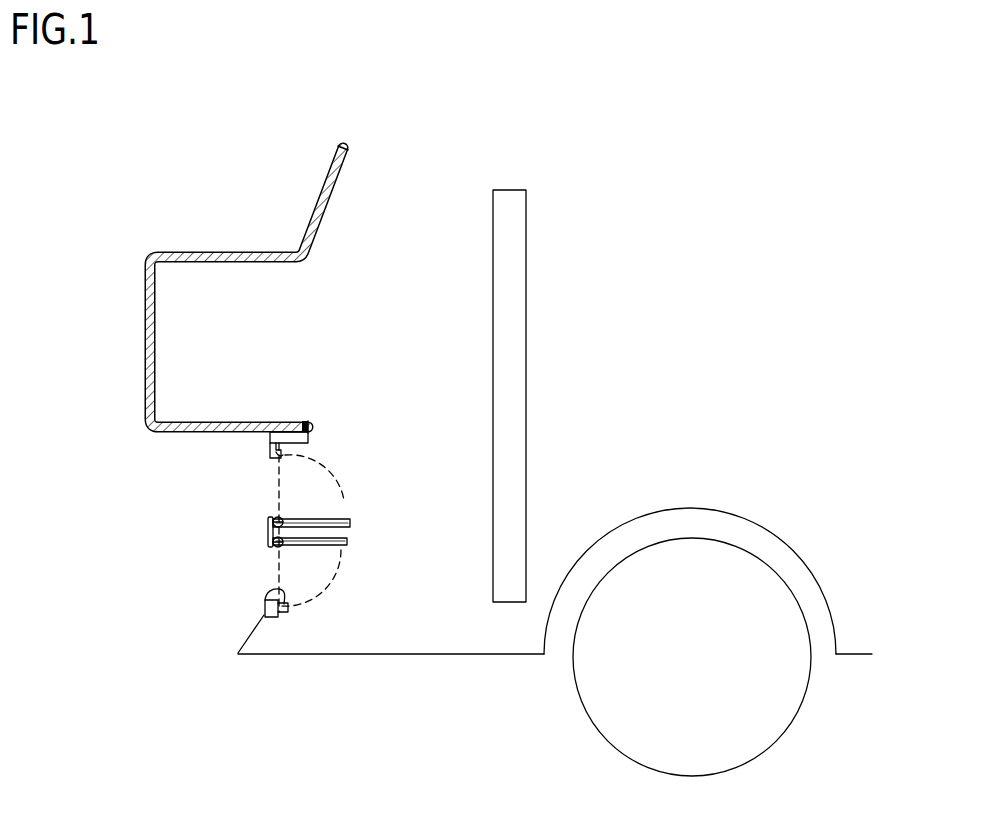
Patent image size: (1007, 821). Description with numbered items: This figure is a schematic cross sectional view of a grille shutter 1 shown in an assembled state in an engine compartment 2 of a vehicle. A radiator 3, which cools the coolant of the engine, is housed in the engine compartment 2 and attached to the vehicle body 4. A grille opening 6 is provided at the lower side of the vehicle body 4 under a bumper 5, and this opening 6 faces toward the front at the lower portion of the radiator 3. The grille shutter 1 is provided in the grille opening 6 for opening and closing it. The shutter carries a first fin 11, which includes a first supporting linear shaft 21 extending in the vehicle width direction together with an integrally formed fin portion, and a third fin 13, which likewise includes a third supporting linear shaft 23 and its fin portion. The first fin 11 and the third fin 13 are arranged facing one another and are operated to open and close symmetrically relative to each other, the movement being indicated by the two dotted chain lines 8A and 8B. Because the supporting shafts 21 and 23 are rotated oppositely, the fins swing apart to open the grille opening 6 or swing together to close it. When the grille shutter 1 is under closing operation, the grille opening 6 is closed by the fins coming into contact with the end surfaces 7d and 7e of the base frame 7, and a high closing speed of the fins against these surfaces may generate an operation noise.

The grille shutter 1 is at (148, 453).
The engine compartment 2 is at (323, 237).
The radiator 3 is at (505, 586).
The vehicle body 4 is at (320, 183).
The bumper 5 is at (143, 292).
The grille opening 6 is at (274, 488).
The base frame 7 is at (270, 438).
The end surface of base frame 7d is at (283, 455).
The end surface of base frame 7e is at (276, 590).
The two dotted chain line 8A is at (330, 468).
The two dotted chain line 8B is at (318, 588).
The first fin 11 is at (320, 532).
The third fin 13 is at (320, 532).
The first supporting linear shaft 21 is at (268, 530).
The third supporting linear shaft 23 is at (268, 545).